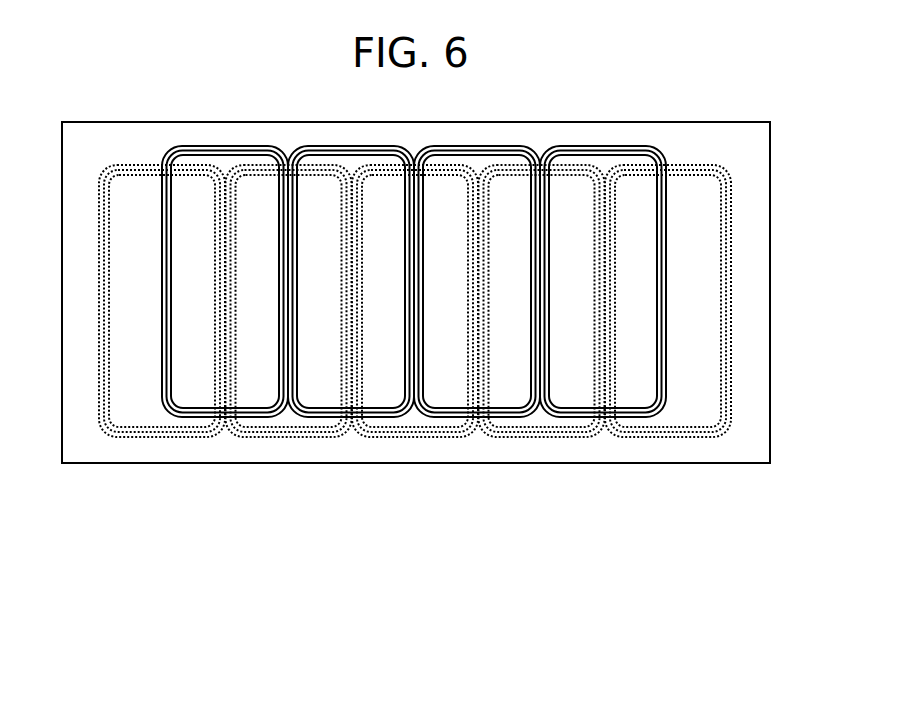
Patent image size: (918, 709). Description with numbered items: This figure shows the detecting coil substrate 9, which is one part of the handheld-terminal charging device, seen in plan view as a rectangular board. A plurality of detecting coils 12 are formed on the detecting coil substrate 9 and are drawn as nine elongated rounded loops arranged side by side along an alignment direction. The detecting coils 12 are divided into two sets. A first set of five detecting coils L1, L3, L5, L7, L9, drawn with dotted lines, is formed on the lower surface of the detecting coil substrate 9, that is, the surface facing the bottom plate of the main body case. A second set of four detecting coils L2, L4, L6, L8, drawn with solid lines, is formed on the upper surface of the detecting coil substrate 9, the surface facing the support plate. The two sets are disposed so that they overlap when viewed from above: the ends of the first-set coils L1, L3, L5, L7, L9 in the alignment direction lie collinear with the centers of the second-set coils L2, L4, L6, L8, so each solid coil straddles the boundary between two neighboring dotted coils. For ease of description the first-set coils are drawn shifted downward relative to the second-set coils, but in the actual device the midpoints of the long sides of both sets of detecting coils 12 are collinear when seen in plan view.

The detecting coil substrate 9 is at (770, 285).
The detecting coils 12 is at (418, 402).
The detecting coil L1 is at (199, 442).
The detecting coil L2 is at (248, 419).
The detecting coil L3 is at (322, 442).
The detecting coil L4 is at (377, 419).
The detecting coil L5 is at (451, 442).
The detecting coil L6 is at (501, 419).
The detecting coil L7 is at (574, 442).
The detecting coil L8 is at (603, 354).
The detecting coil L9 is at (705, 442).